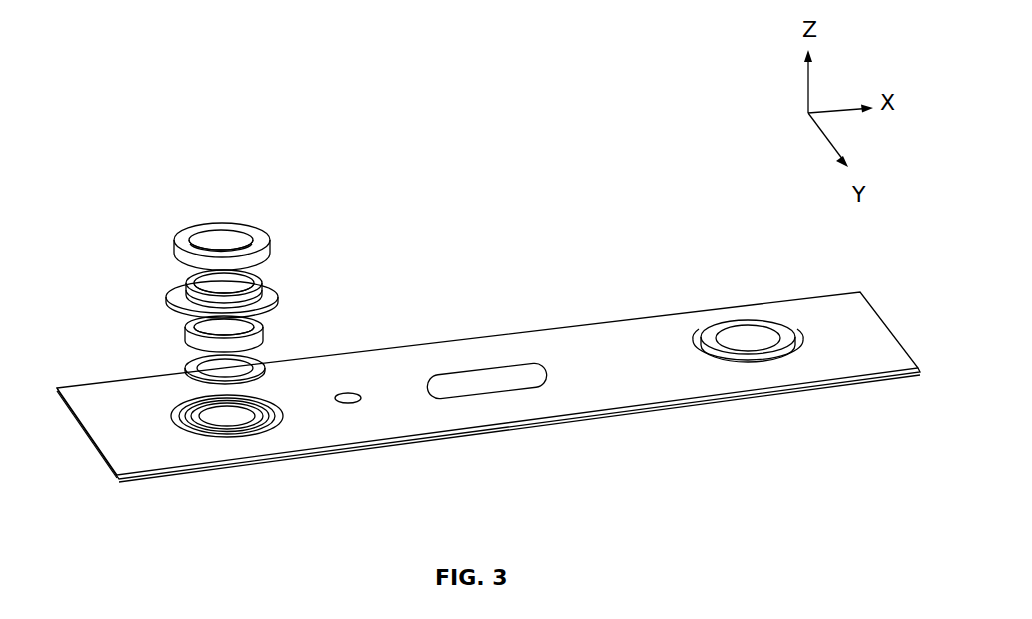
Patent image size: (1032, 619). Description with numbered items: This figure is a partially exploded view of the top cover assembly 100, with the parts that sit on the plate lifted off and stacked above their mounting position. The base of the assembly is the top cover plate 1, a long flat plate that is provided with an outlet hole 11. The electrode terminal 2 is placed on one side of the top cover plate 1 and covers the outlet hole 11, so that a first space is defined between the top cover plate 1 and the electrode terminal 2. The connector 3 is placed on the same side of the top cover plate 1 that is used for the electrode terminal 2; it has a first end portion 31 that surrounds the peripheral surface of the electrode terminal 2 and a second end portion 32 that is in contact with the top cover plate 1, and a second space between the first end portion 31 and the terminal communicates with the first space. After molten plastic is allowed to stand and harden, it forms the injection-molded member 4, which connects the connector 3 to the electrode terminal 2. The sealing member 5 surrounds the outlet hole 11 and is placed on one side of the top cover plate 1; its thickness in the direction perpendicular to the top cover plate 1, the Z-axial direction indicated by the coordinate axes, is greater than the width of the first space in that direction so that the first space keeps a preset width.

The top cover assembly 100 is at (92, 143).
The top cover plate 1 is at (572, 342).
The outlet hole 11 is at (248, 420).
The electrode terminal 2 is at (263, 333).
The connector 3 is at (267, 280).
The first end portion 31 is at (250, 280).
The second end portion 32 is at (268, 300).
The injection-molded member 4 is at (264, 235).
The sealing member 5 is at (263, 363).